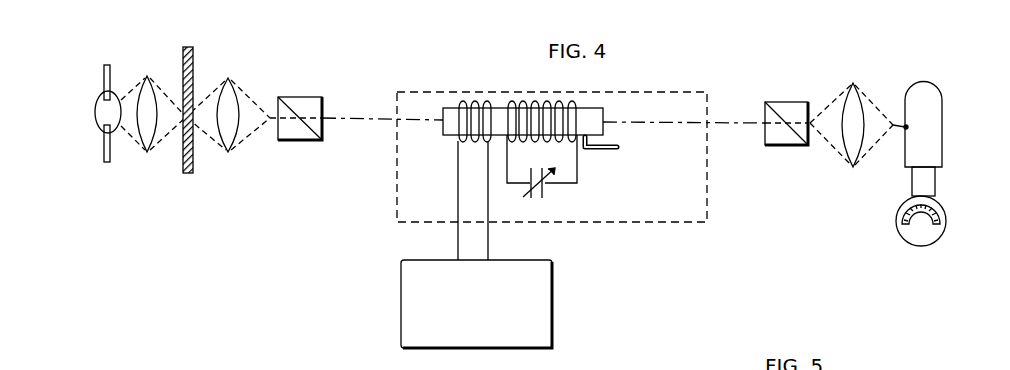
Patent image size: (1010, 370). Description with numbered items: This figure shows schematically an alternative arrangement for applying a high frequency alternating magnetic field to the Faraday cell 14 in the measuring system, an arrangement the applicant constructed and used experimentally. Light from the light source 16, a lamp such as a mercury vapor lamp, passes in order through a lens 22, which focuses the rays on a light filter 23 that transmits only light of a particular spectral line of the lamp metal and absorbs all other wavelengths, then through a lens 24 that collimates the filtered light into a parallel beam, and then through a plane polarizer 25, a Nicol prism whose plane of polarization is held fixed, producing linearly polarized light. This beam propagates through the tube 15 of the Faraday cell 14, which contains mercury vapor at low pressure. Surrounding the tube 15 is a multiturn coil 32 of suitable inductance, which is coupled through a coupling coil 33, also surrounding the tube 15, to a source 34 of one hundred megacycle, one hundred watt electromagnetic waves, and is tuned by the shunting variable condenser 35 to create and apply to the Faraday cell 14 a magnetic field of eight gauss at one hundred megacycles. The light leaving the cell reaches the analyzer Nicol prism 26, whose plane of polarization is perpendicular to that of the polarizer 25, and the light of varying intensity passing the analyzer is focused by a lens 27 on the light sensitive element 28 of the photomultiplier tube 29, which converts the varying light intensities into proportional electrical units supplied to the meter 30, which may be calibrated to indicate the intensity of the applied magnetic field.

The Faraday cell 14 is at (430, 112).
The tube of Faraday cell 15 is at (493, 116).
The light source 16 is at (97, 101).
The lens 22 is at (161, 91).
The light filter 23 is at (194, 60).
The lens 24 is at (240, 85).
The plane polarizer 25 is at (310, 97).
The analyzer Nicol prism 26 is at (793, 102).
The lens 27 is at (865, 100).
The light sensitive element 28 is at (904, 131).
The photomultiplier tube 29 is at (942, 112).
The meter 30 is at (946, 209).
The multiturn coil 32 is at (575, 118).
The coupling coil 33 is at (458, 120).
The source 34 is at (552, 290).
The variable condenser 35 is at (548, 193).